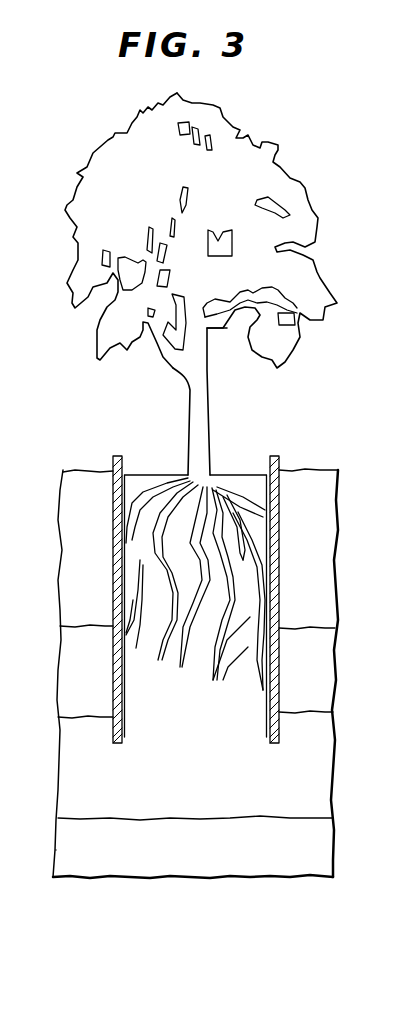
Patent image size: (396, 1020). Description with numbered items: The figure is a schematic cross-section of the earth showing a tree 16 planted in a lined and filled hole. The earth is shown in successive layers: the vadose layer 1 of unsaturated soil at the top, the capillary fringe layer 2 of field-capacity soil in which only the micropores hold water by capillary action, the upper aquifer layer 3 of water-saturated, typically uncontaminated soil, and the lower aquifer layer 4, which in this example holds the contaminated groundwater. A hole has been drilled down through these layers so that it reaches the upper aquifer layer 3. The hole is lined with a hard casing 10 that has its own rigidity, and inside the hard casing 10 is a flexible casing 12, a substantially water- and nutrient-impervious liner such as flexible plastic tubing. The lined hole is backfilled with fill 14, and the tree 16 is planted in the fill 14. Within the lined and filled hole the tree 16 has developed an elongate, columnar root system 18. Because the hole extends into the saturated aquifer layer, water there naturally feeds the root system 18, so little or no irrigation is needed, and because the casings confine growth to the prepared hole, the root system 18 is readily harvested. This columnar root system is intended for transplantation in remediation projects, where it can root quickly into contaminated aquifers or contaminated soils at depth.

The vadose layer 1 is at (183, 577).
The capillary fringe layer 2 is at (182, 687).
The upper aquifer layer 3 is at (182, 786).
The lower aquifer layer 4 is at (44, 852).
The hard casing 10 is at (110, 470).
The flexible casing 12 is at (127, 472).
The fill 14 is at (248, 475).
The tree 16 is at (210, 403).
The root system 18 is at (253, 562).